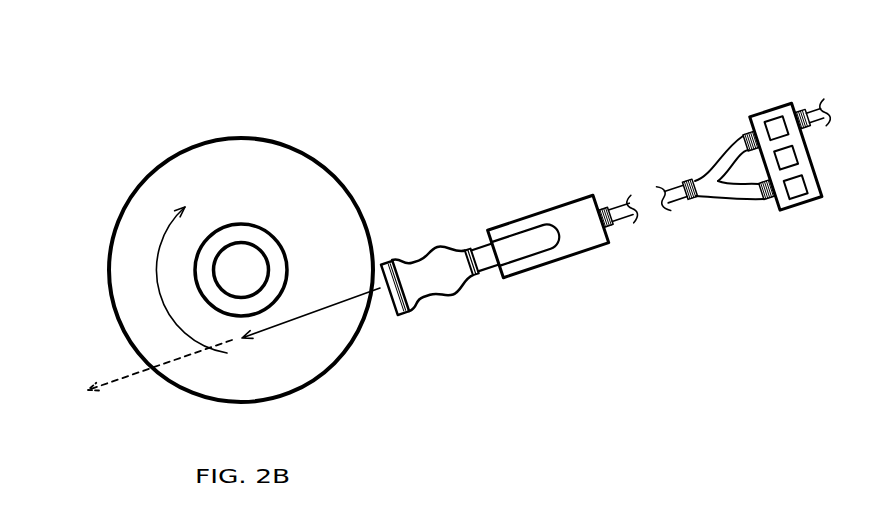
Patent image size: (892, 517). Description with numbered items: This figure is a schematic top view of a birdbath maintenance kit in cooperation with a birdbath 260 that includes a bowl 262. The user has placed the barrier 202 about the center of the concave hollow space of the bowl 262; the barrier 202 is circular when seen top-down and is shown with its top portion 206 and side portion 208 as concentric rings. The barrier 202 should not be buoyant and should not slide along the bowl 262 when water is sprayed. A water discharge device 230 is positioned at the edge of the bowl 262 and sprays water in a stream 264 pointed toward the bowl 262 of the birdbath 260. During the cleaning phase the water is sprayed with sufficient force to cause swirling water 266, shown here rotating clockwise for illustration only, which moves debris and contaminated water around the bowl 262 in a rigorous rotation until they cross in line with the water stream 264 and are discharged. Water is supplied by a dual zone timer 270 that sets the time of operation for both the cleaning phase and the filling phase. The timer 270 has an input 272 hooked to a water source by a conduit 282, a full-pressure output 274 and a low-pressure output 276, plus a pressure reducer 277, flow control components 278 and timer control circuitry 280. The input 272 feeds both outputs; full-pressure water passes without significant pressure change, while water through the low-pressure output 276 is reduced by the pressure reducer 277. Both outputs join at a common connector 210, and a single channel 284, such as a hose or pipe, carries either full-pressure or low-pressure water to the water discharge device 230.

The barrier 202 is at (251, 250).
The top portion 206 is at (241, 253).
The side portion 208 is at (275, 255).
The common connector 210 is at (722, 215).
The water discharge device 230 is at (541, 291).
The birdbath 260 is at (98, 335).
The bowl 262 is at (173, 173).
The water stream 264 is at (310, 317).
The swirling water 266 is at (162, 242).
The dual zone timer 270 is at (790, 134).
The input 272 is at (803, 119).
The full-pressure output 274 is at (751, 141).
The low-pressure output 276 is at (767, 190).
The pressure reducer 277 is at (786, 158).
The flow control components 278 is at (777, 128).
The timer control circuitry 280 is at (796, 187).
The conduit 282 is at (818, 114).
The channel 284 is at (670, 189).